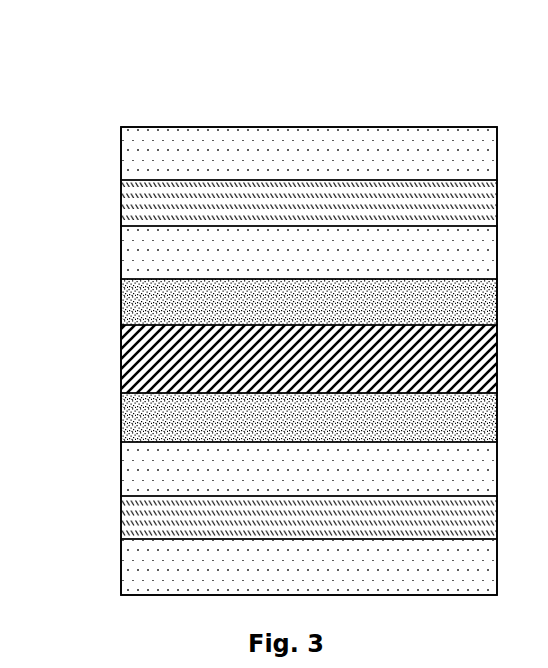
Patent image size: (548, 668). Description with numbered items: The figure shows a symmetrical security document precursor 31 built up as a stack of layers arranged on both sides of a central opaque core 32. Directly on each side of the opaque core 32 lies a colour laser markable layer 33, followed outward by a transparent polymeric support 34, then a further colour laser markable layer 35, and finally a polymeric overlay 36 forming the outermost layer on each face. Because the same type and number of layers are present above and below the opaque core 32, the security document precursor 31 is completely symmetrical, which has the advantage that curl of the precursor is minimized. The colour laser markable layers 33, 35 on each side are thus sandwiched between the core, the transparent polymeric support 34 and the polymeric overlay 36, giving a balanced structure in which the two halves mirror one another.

The multilayer coating stack 31 is at (281, 88).
The opaque core 32 is at (122, 345).
The colour laser markable layer 33 is at (140, 310).
The transparent polymeric support 34 is at (130, 250).
The colour laser markable layer 35 is at (125, 208).
The polymeric overlay 36 is at (157, 152).